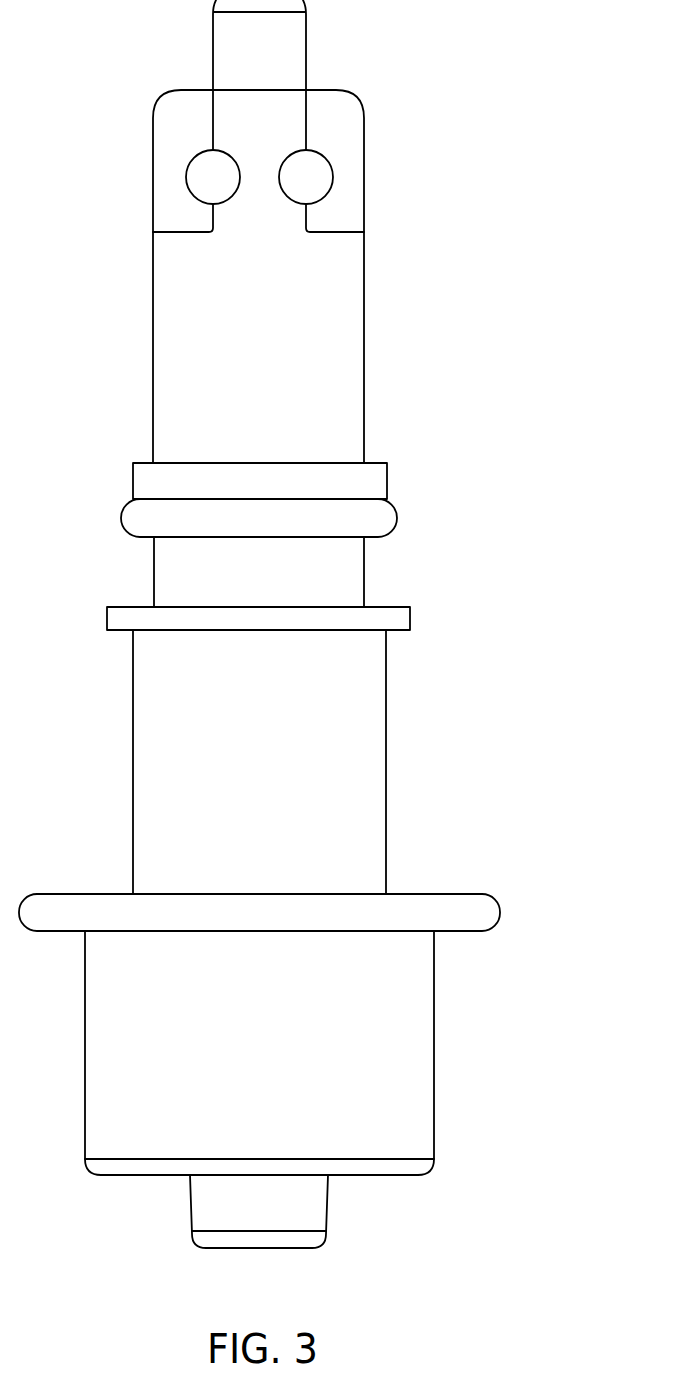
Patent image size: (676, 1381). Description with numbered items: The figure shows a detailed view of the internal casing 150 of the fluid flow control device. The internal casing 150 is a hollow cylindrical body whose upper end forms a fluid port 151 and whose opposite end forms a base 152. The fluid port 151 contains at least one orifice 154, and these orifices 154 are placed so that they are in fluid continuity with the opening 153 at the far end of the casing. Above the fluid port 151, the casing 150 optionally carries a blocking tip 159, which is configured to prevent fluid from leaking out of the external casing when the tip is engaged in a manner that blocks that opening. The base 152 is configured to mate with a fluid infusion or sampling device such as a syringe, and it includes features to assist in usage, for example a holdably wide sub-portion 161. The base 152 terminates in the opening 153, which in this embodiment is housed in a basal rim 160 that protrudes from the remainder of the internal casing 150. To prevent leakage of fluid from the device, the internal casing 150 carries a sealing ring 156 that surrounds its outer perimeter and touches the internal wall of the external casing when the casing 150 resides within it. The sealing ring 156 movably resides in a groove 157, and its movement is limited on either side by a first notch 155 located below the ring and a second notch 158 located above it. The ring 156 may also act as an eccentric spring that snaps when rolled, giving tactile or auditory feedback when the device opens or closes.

The internal casing 150 is at (386, 736).
The fluid port 151 is at (153, 197).
The base 152 is at (434, 1065).
The opening 153 is at (230, 1250).
The orifices 154 is at (218, 177).
The first notch 155 is at (410, 612).
The sealing ring 156 is at (397, 517).
The groove 157 is at (154, 555).
The second notch 158 is at (133, 478).
The blocking tip 159 is at (306, 22).
The basal rim 160 is at (330, 1195).
The holdably wide sub-portion 161 is at (500, 912).